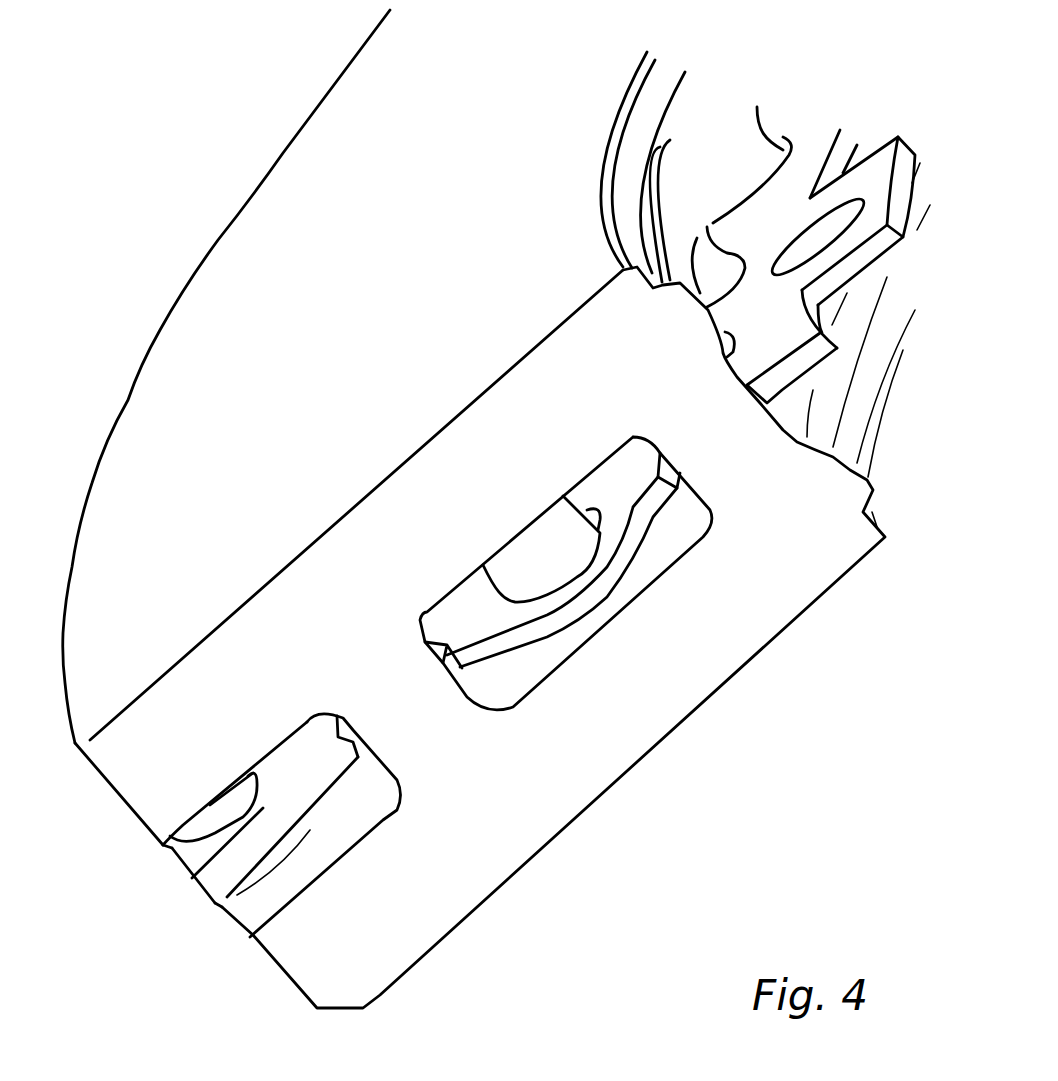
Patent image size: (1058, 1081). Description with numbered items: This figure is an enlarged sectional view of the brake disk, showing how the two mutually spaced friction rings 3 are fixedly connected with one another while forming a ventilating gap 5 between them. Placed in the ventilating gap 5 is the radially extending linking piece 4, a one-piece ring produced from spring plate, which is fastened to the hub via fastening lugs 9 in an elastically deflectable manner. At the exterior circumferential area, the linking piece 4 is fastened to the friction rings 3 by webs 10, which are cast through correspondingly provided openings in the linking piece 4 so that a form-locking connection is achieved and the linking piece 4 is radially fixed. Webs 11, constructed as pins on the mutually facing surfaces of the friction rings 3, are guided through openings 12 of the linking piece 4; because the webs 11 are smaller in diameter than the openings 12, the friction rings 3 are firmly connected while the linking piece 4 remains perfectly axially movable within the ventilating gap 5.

The friction rings 3 is at (281, 183).
The linking piece 4 is at (190, 877).
The ventilating gap 5 is at (520, 687).
The fastening lugs 9 is at (872, 173).
The webs 10 is at (213, 804).
The webs 11 is at (533, 553).
The openings 12 is at (343, 717).